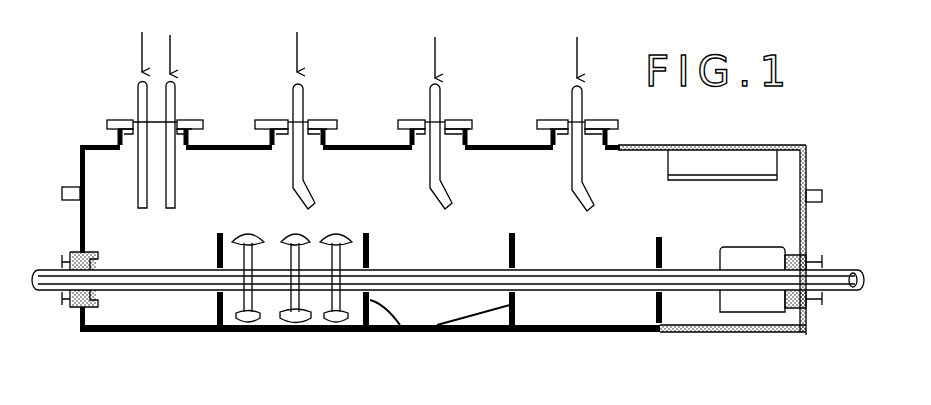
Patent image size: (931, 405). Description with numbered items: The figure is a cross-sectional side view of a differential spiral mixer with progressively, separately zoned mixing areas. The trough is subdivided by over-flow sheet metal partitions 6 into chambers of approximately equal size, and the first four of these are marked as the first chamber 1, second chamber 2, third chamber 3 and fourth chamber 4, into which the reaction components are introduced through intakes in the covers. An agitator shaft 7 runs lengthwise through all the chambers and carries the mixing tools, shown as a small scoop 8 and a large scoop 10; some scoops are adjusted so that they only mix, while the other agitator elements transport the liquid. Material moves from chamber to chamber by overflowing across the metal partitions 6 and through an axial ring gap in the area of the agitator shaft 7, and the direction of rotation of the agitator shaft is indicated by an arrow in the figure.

The first chamber 1 is at (182, 262).
The second chamber 2 is at (271, 256).
The third chamber 3 is at (445, 258).
The fourth chamber 4 is at (587, 253).
The over-flow sheet metal partition 6 is at (400, 325).
The agitator shaft 7 is at (838, 262).
The small scoop 8 is at (248, 324).
The large scoop 10 is at (294, 325).